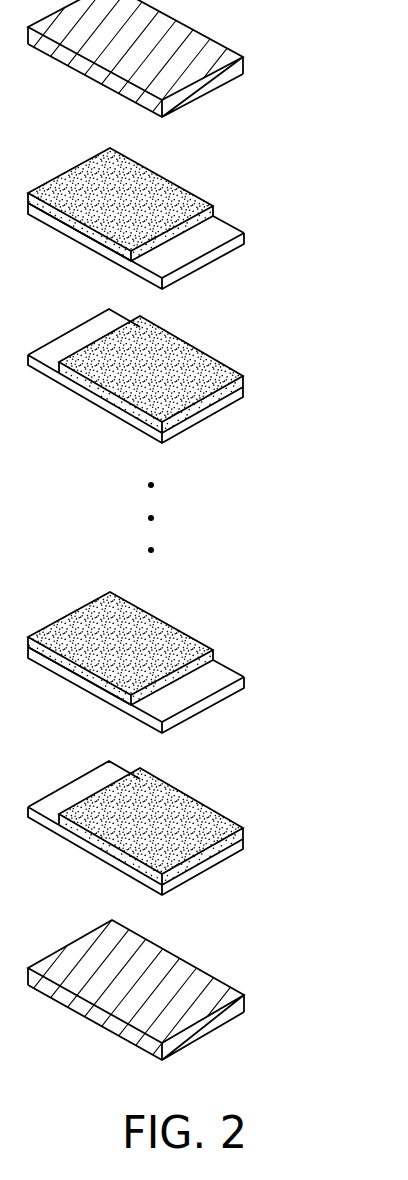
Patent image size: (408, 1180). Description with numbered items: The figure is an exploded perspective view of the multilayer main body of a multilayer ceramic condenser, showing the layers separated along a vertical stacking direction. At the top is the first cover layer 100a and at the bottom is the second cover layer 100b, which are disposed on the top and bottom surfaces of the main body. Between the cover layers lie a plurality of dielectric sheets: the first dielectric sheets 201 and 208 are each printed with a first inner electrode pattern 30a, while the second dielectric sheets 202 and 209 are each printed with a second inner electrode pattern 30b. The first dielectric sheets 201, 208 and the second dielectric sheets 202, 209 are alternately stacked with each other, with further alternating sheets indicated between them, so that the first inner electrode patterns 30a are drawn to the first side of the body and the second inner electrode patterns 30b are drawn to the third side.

The first cover layer 100a is at (186, 72).
The first inner electrode pattern 30a is at (147, 192).
The first dielectric sheet 201 is at (190, 247).
The second inner electrode pattern 30b is at (197, 350).
The second dielectric sheet 202 is at (200, 413).
The first dielectric sheet 208 is at (195, 698).
The second dielectric sheet 209 is at (194, 830).
The second cover layer 100b is at (187, 1013).